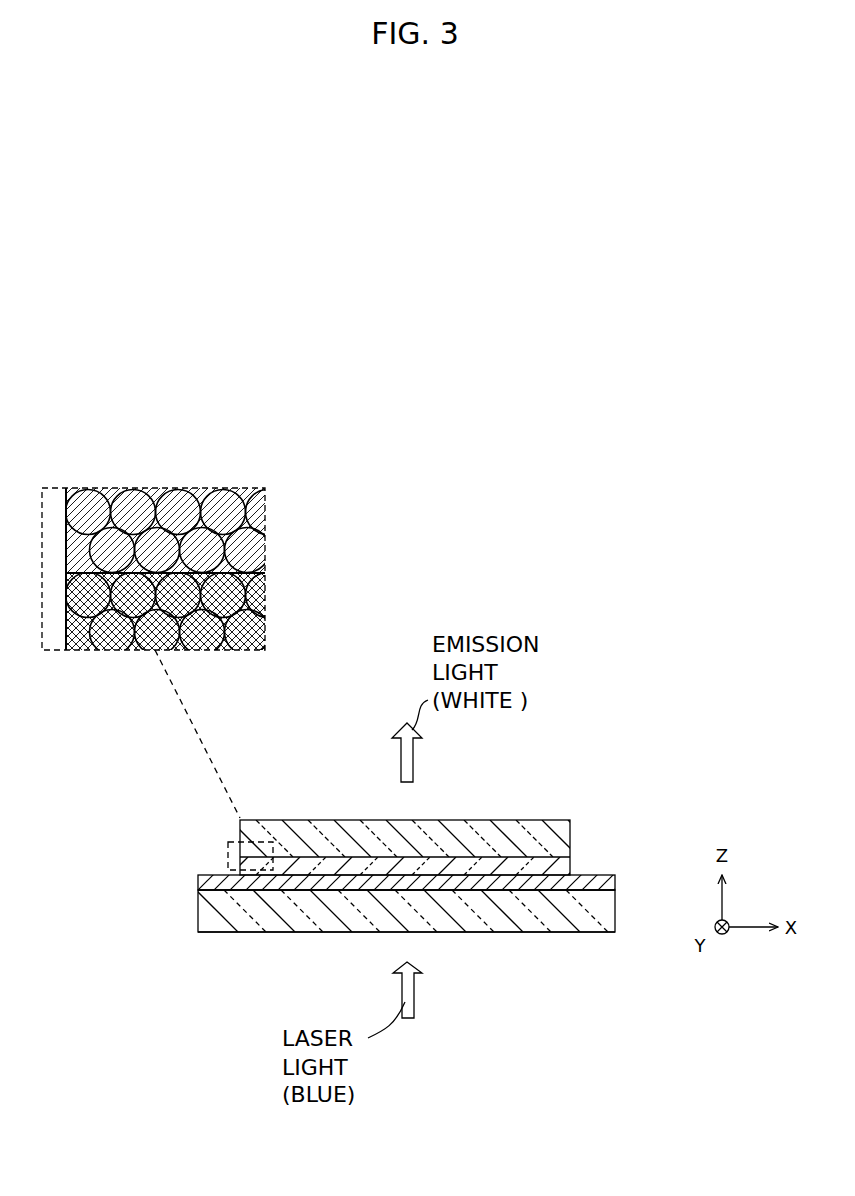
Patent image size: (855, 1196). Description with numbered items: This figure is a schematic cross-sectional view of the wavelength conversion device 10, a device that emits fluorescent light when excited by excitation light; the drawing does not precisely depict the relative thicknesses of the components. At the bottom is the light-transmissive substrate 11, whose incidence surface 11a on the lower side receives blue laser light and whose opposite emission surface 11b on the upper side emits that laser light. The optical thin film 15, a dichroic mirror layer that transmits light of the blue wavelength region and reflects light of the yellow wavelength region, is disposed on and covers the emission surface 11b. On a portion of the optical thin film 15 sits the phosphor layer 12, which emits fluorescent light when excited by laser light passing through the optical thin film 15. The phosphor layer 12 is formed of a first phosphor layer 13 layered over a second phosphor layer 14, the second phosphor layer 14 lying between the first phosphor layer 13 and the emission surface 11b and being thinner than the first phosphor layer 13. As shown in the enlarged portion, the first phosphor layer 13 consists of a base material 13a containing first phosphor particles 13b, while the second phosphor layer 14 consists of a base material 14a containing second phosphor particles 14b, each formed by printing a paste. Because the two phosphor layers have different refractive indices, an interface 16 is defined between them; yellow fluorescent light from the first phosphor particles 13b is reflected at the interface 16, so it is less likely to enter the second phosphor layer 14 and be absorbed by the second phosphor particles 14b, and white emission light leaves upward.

The wavelength conversion device 10 is at (327, 718).
The light-transmissive substrate 11 is at (203, 912).
The incidence surface 11a is at (588, 934).
The emission surface 11b is at (585, 886).
The phosphor layer 12 is at (317, 643).
The first phosphor layer 13 is at (517, 832).
The base material 13a is at (78, 547).
The first phosphor particles 13b is at (133, 507).
The second phosphor layer 14 is at (473, 867).
The base material 14a is at (77, 635).
The second phosphor particles 14b is at (113, 640).
The optical thin film 15 is at (203, 885).
The interface 16 is at (303, 855).